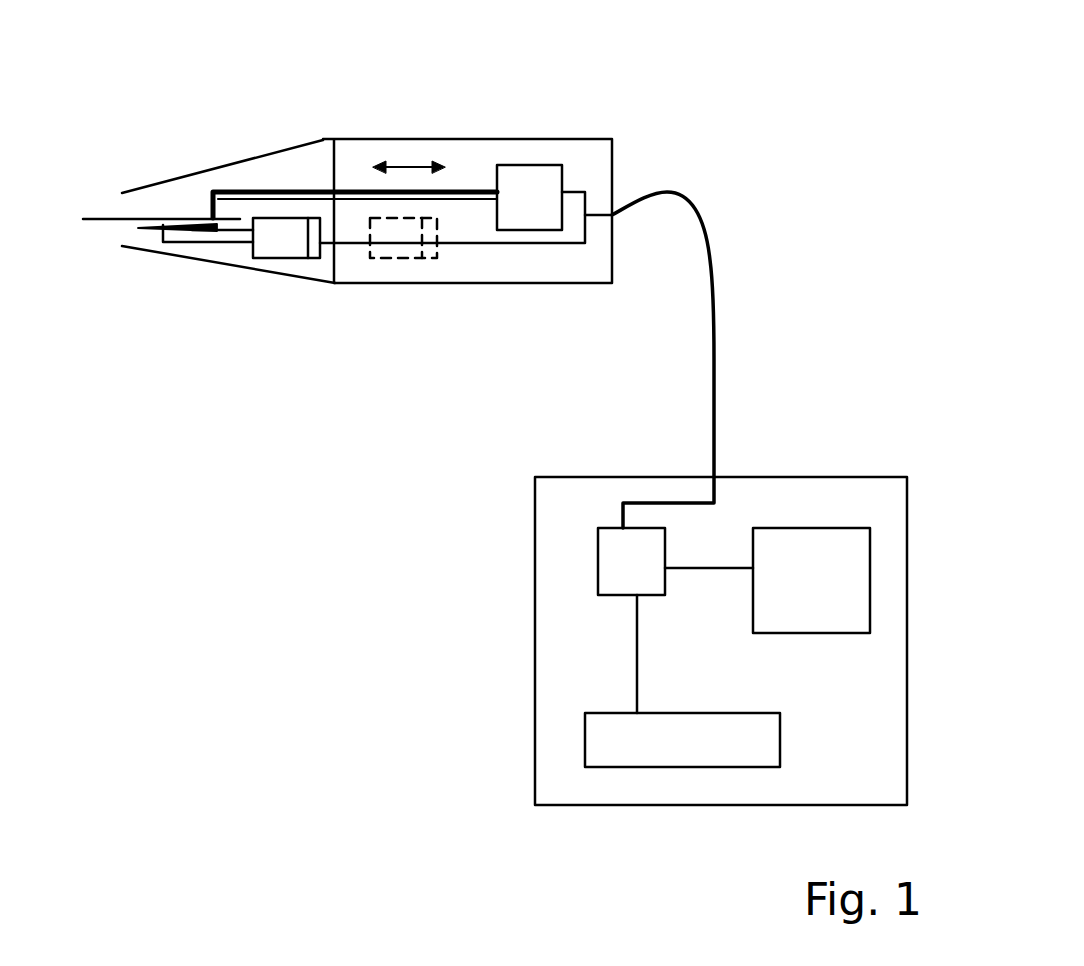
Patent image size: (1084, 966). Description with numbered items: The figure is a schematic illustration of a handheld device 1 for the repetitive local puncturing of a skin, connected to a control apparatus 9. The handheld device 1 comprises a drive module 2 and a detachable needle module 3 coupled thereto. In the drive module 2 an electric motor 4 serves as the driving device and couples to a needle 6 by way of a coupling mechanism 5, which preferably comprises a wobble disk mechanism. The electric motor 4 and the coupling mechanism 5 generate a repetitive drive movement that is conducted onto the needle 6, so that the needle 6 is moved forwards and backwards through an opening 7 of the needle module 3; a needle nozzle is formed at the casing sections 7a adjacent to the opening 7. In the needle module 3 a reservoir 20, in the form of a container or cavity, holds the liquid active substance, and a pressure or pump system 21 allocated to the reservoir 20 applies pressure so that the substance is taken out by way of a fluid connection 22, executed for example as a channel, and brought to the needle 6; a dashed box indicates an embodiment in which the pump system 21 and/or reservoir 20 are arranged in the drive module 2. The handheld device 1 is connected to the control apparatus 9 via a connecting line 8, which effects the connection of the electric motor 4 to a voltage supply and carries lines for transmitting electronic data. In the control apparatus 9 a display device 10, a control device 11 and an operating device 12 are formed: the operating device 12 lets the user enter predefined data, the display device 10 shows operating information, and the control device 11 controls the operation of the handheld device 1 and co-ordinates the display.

The handheld device 1 is at (455, 147).
The drive module 2 is at (562, 157).
The needle module 3 is at (267, 172).
The electric motor 4 is at (550, 182).
The coupling mechanism 5 is at (350, 187).
The needle 6 is at (103, 216).
The opening 7 is at (120, 230).
The casing sections 7a is at (153, 253).
The connecting line 8 is at (712, 283).
The control apparatus 9 is at (540, 648).
The display device 10 is at (818, 547).
The control device 11 is at (603, 562).
The operating device 12 is at (627, 755).
The reservoir 20 is at (290, 250).
The pump system 21 is at (318, 248).
The fluid connection 22 is at (218, 242).